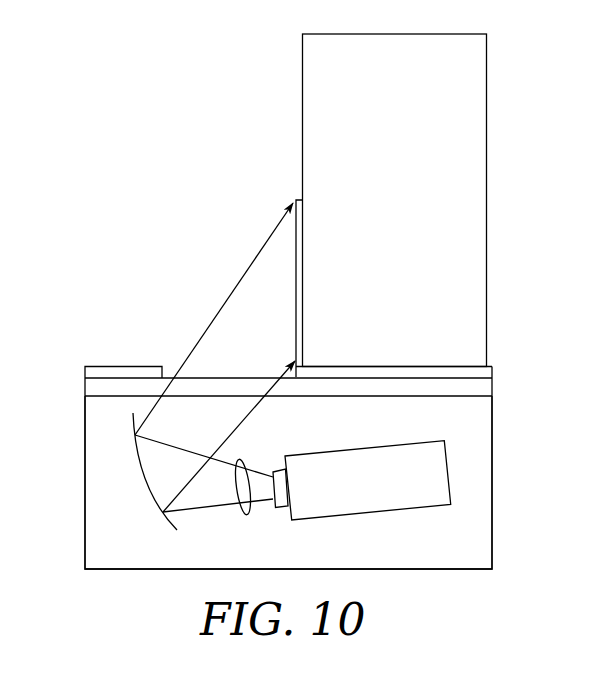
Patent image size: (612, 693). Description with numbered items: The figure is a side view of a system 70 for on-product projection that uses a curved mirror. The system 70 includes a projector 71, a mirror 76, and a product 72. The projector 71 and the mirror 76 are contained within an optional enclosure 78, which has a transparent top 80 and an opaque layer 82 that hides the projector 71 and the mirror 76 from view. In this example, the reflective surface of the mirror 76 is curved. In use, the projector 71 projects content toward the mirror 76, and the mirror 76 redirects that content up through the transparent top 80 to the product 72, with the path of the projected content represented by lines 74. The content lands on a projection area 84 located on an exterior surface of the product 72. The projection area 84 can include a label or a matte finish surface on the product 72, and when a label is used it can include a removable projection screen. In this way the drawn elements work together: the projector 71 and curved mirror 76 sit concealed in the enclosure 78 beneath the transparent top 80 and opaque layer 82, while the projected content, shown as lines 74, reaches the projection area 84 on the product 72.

The system 70 is at (190, 194).
The projector 71 is at (368, 514).
The product 72 is at (487, 234).
The lines 74 is at (247, 510).
The mirror 76 is at (152, 499).
The enclosure 78 is at (85, 470).
The transparent top 80 is at (90, 385).
The opaque layer 82 is at (96, 372).
The projection area 84 is at (295, 328).